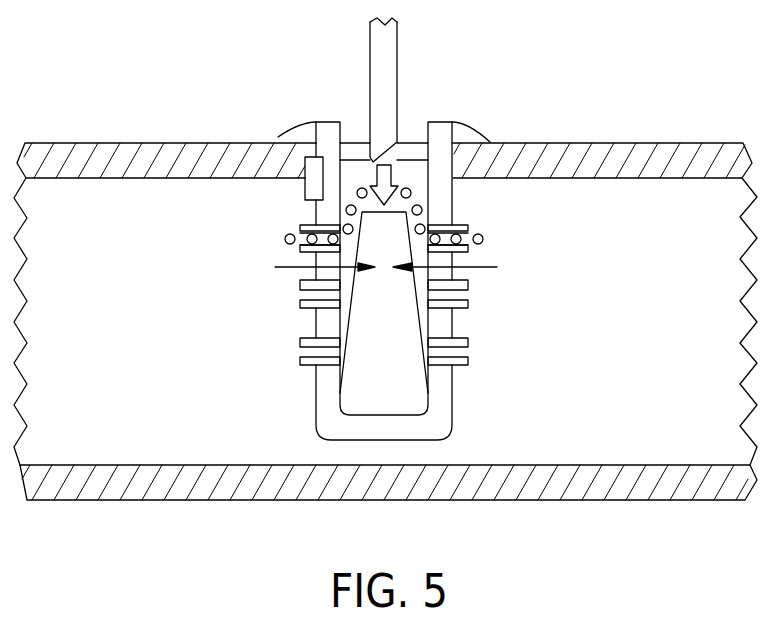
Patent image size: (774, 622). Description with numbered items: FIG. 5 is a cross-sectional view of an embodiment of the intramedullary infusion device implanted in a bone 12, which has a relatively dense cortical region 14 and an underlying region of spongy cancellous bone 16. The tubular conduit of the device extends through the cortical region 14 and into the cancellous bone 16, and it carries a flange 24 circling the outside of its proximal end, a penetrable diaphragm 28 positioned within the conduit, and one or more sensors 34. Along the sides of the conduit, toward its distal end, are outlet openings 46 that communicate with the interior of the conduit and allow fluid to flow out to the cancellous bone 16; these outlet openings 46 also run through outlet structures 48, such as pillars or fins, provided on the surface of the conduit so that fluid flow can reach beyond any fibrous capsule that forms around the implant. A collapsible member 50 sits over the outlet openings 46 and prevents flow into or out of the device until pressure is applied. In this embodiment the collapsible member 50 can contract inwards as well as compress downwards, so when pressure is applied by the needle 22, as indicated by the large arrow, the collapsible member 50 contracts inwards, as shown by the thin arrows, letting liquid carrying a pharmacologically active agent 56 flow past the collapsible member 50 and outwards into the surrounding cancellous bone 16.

The bone 12 is at (665, 130).
The cortical region 14 is at (593, 155).
The cancellous bone 16 is at (600, 440).
The needle 22 is at (396, 50).
The flange 24 is at (323, 124).
The penetrable diaphragm 28 is at (410, 152).
The sensor 34 is at (305, 165).
The outlet openings 46 is at (300, 356).
The outlet structure 48 is at (300, 343).
The collapsible member 50 is at (397, 333).
The pharmacologically active agent 56 is at (422, 210).